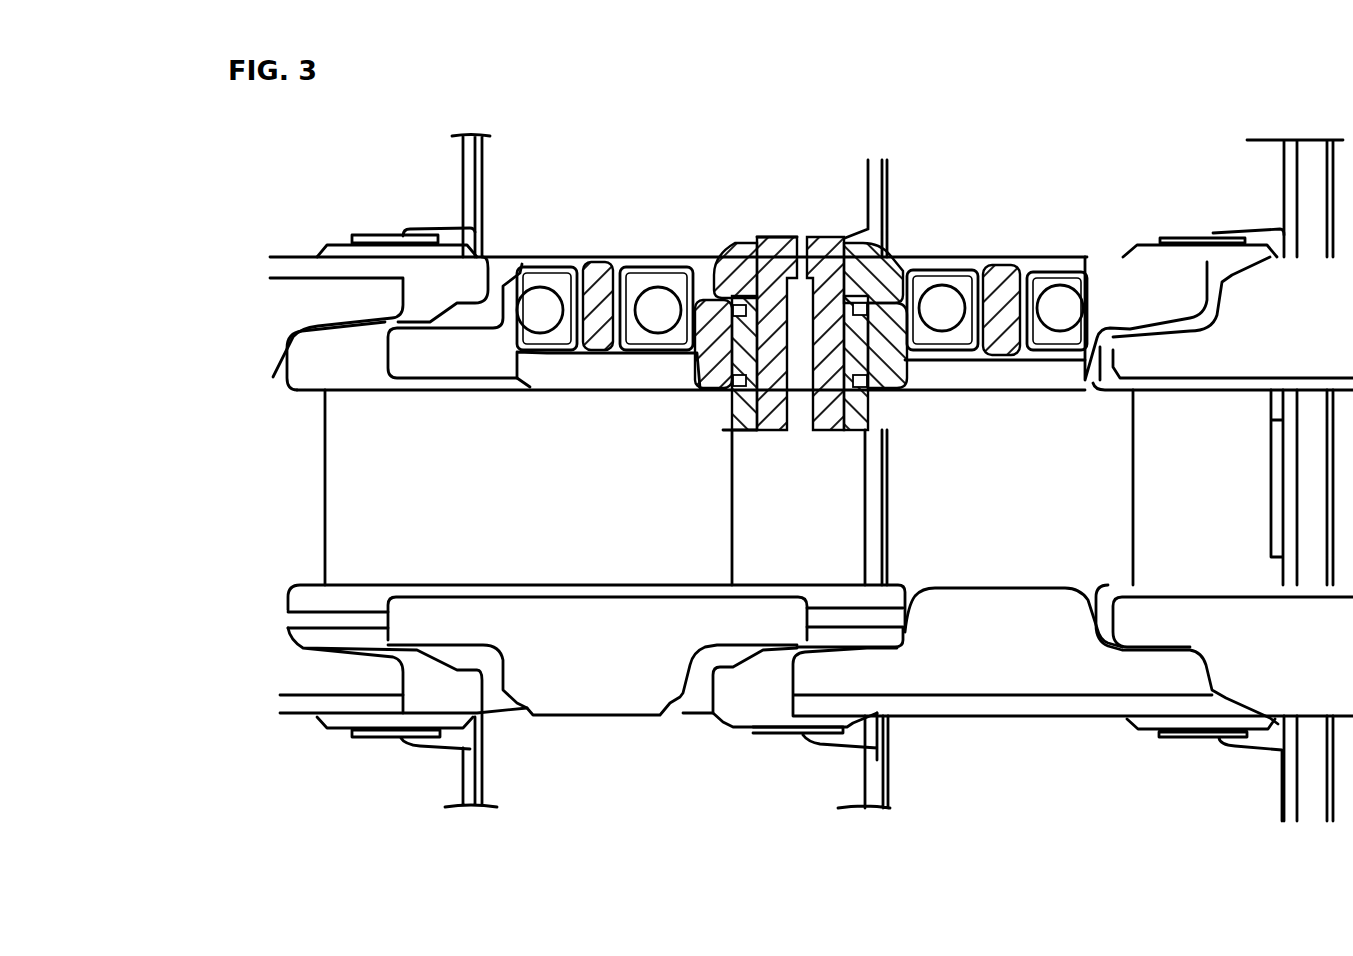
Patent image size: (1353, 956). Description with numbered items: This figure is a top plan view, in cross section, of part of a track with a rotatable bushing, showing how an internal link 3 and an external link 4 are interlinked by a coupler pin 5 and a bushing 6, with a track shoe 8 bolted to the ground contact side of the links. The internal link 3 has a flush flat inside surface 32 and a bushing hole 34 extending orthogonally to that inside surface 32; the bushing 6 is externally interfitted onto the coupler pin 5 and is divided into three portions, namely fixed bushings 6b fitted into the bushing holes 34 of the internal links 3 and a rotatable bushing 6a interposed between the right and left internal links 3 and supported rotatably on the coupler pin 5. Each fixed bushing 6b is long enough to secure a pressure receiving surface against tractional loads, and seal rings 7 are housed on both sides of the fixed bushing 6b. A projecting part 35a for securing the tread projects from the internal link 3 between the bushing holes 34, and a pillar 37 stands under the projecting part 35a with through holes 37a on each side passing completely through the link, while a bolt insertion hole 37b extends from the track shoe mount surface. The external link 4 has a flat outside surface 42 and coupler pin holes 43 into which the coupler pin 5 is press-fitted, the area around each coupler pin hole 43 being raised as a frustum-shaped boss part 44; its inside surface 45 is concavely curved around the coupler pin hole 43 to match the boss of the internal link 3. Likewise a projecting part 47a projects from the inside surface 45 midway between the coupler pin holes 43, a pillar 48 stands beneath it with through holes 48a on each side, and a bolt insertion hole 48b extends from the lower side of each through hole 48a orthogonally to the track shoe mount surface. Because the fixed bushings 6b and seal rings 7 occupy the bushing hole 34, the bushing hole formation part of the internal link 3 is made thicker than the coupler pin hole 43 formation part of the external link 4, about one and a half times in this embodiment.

The internal link 3 is at (650, 397).
The external link 4 is at (887, 262).
The coupler pin 5 is at (825, 250).
The bushing 6 is at (437, 543).
The rotatable bushing 6a is at (853, 487).
The fixed bushing 6b is at (860, 350).
The seal ring 7 is at (877, 300).
The track shoe 8 is at (923, 785).
The inside surface 32 is at (510, 395).
The bushing hole 34 is at (707, 388).
The projecting part 35a is at (563, 670).
The pillar 37 is at (603, 288).
The through hole 37a is at (533, 293).
The bolt insertion hole 37b is at (527, 268).
The outside surface 42 is at (1073, 257).
The coupler pin hole 43 is at (767, 237).
The boss part 44 is at (717, 256).
The inside surface 45 is at (967, 360).
The projecting part 47a is at (1000, 603).
The pillar 48 is at (1020, 307).
The through hole 48a is at (1028, 275).
The bolt insertion hole 48b is at (1085, 300).